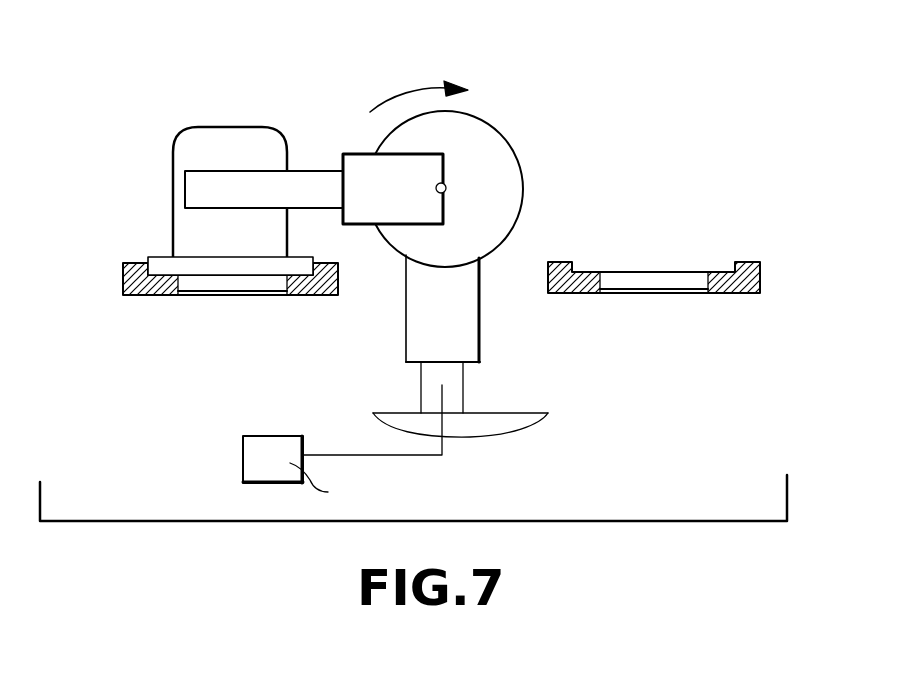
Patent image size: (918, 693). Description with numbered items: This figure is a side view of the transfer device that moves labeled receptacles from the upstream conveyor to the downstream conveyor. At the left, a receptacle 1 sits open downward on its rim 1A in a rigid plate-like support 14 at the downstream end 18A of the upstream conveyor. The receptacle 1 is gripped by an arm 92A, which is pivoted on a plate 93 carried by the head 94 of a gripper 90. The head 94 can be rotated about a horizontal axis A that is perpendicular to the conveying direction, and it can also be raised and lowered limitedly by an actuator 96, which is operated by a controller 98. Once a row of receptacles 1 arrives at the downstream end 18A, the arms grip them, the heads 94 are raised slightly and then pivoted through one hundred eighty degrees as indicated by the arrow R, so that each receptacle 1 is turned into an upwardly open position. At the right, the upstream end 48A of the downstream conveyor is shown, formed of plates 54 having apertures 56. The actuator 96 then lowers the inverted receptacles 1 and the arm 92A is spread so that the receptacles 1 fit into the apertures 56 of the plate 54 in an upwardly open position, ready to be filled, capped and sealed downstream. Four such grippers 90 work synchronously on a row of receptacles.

The receptacle 1 is at (212, 158).
The rim 1A is at (232, 266).
The support 14 is at (135, 297).
The downstream end of the conveyor 18A is at (200, 267).
The upstream end of the downstream conveyor 48A is at (672, 234).
The plate 54 is at (753, 263).
The aperture 56 is at (642, 290).
The gripper 90 is at (543, 192).
The arm 92A is at (248, 193).
The plate 93 is at (410, 195).
The head 94 is at (470, 141).
The actuator 96 is at (463, 330).
The controller 98 is at (262, 452).
The horizontal axis A is at (446, 185).
The arrow R is at (403, 92).